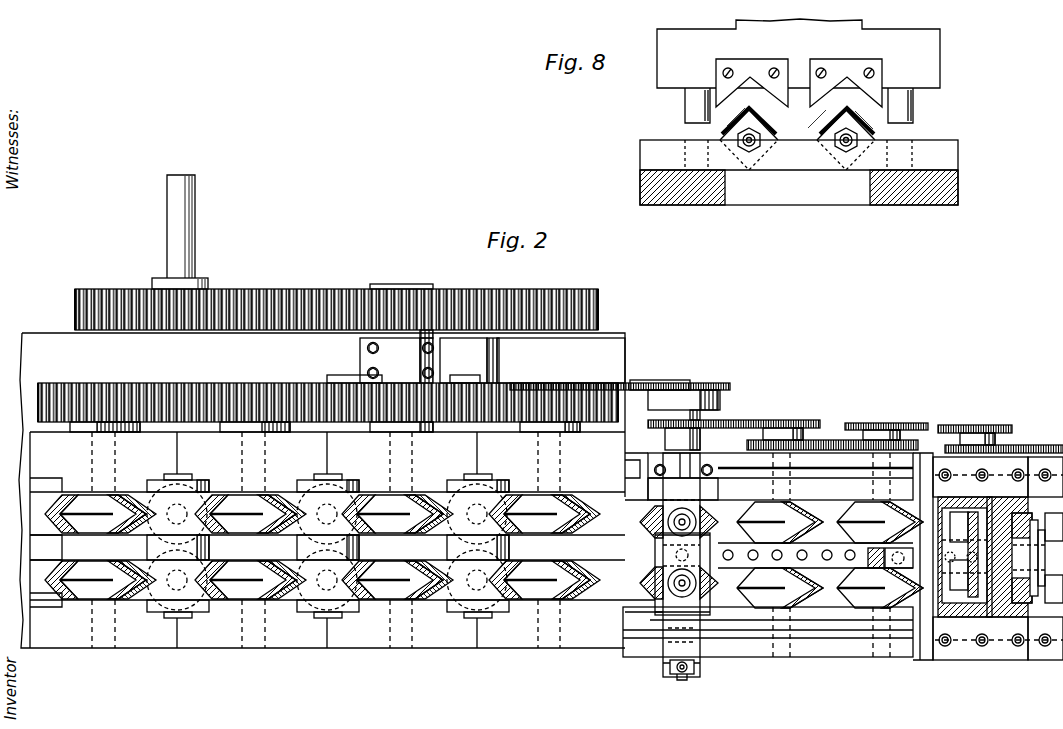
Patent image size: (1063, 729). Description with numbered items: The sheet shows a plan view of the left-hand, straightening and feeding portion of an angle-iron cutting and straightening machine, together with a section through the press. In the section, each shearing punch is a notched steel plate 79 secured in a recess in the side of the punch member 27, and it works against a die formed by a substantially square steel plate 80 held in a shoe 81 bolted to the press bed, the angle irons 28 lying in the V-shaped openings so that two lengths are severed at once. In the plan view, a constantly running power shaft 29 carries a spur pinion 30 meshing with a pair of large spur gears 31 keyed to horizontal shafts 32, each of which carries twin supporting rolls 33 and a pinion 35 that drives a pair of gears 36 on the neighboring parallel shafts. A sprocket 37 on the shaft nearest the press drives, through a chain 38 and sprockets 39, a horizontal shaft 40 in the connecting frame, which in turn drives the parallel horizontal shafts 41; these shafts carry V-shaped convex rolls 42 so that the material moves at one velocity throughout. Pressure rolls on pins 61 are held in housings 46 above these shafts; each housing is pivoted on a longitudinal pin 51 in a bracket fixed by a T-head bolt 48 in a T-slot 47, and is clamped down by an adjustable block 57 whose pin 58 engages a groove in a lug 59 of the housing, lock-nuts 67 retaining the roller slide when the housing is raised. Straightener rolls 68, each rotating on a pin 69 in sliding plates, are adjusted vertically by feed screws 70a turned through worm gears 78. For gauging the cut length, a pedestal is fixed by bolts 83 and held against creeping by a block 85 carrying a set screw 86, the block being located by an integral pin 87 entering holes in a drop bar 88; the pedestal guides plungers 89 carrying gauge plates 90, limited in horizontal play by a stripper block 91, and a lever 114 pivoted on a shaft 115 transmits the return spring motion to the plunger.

In FIG. 8, the punch member 27 is at (885, 40).
In FIG. 8, the notched steel plate 79 is at (738, 66).
In FIG. 8, the angle irons 28 is at (740, 110).
In FIG. 8, the square steel plate 80 is at (778, 138).
In FIG. 8, the shoe 81 is at (880, 141).
In FIG. 2, the power shaft 29 is at (190, 208).
In FIG. 2, the spur pinion 30 is at (165, 292).
In FIG. 2, the spur gears 31 is at (98, 292).
In FIG. 2, the horizontal shafts 32 is at (402, 284).
In FIG. 2, the pinion 35 is at (400, 410).
In FIG. 2, the gears 36 is at (250, 395).
In FIG. 2, the sprocket 37 is at (582, 383).
In FIG. 2, the chain 38 is at (635, 386).
In FIG. 2, the sprockets 39 is at (710, 388).
In FIG. 2, the horizontal shaft 40 is at (700, 420).
In FIG. 2, the parallel horizontal shafts 41 is at (870, 488).
In FIG. 2, the V-shaped convex rolls 42 is at (760, 600).
In FIG. 2, the housings 46 is at (625, 622).
In FIG. 2, the T-slot 47 is at (835, 650).
In FIG. 2, the T-head bolt 48 is at (708, 465).
In FIG. 2, the longitudinal pin 51 is at (720, 490).
In FIG. 2, the adjustable block 57 is at (680, 680).
In FIG. 2, the pin 58 is at (696, 667).
In FIG. 2, the lug 59 is at (672, 650).
In FIG. 2, the pin 61 is at (640, 590).
In FIG. 2, the lock-nuts 67 is at (640, 527).
In FIG. 2, the straightener rolls 68 is at (147, 590).
In FIG. 2, the pin 69 is at (167, 479).
In FIG. 2, the feed screw 70a is at (300, 492).
In FIG. 2, the worm gear 78 is at (470, 480).
In FIG. 2, the supporting rolls 33 is at (385, 510).
In FIG. 2, the bolts 83 is at (1020, 470).
In FIG. 2, the block 85 is at (892, 568).
In FIG. 2, the set screw 86 is at (875, 548).
In FIG. 2, the integral pin 87 is at (820, 548).
In FIG. 2, the drop bar 88 is at (728, 540).
In FIG. 2, the plungers 89 is at (1035, 515).
In FIG. 2, the gauge plate 90 is at (1054, 589).
In FIG. 2, the stripper block 91 is at (1054, 527).
In FIG. 2, the lever 114 is at (995, 508).
In FIG. 2, the shaft 115 is at (967, 557).